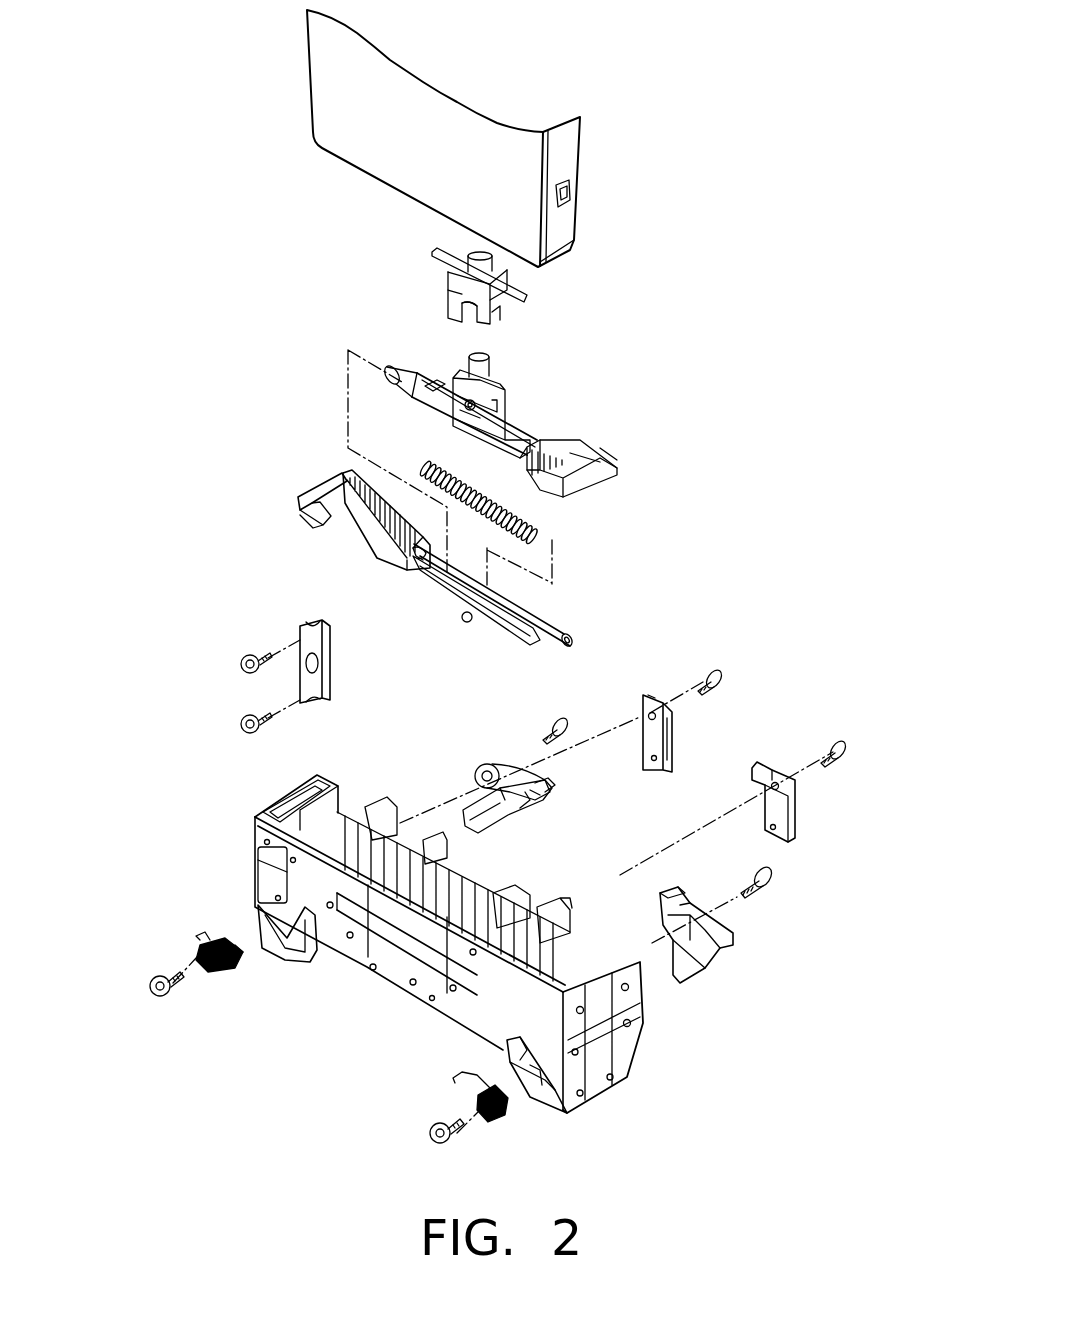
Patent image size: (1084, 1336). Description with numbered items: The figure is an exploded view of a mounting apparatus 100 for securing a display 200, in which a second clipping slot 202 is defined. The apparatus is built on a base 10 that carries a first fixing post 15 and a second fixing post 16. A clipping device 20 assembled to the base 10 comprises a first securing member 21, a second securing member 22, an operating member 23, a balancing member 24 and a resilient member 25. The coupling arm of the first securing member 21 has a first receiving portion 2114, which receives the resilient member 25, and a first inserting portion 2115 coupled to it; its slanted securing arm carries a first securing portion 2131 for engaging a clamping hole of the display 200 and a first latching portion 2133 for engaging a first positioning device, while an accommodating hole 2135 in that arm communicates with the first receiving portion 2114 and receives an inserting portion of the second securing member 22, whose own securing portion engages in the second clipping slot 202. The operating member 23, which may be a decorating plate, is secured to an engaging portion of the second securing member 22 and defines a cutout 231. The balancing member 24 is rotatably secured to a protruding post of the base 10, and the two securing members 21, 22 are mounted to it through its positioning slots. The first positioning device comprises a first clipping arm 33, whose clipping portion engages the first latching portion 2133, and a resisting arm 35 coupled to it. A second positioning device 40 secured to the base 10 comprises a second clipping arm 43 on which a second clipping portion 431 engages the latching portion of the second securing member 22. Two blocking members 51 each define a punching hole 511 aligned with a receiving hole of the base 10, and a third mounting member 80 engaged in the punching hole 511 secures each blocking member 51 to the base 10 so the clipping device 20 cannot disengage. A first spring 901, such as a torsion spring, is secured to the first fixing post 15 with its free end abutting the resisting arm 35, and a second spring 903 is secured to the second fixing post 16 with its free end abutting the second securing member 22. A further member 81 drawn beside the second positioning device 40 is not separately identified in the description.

The mounting apparatus 100 is at (188, 583).
The display 200 is at (595, 50).
The second clipping slot 202 is at (569, 192).
The base 10 is at (238, 825).
The first fixing post 15 is at (287, 913).
The second fixing post 16 is at (537, 1063).
The clipping device 20 is at (718, 313).
The first securing member 21 is at (558, 613).
The first receiving portion 2114 is at (473, 583).
The first inserting portion 2115 is at (562, 622).
The first securing portion 2131 is at (313, 520).
The first latching portion 2133 is at (402, 568).
The accommodating hole 2135 is at (423, 580).
The second securing member 22 is at (575, 405).
The operating member 23 is at (527, 317).
The cutout 231 is at (472, 310).
The balancing member 24 is at (330, 683).
The resilient member 25 is at (522, 522).
The first clipping arm 33 is at (484, 762).
The resisting arm 35 is at (500, 825).
The second positioning device 40 is at (713, 973).
The second clipping arm 43 is at (720, 932).
The second clipping portion 431 is at (670, 890).
The blocking member 51 is at (780, 817).
The punching hole 511 is at (784, 787).
The third mounting member 80 is at (728, 669).
The screw 81 is at (765, 886).
The first spring 901 is at (198, 940).
The second spring 903 is at (477, 1100).